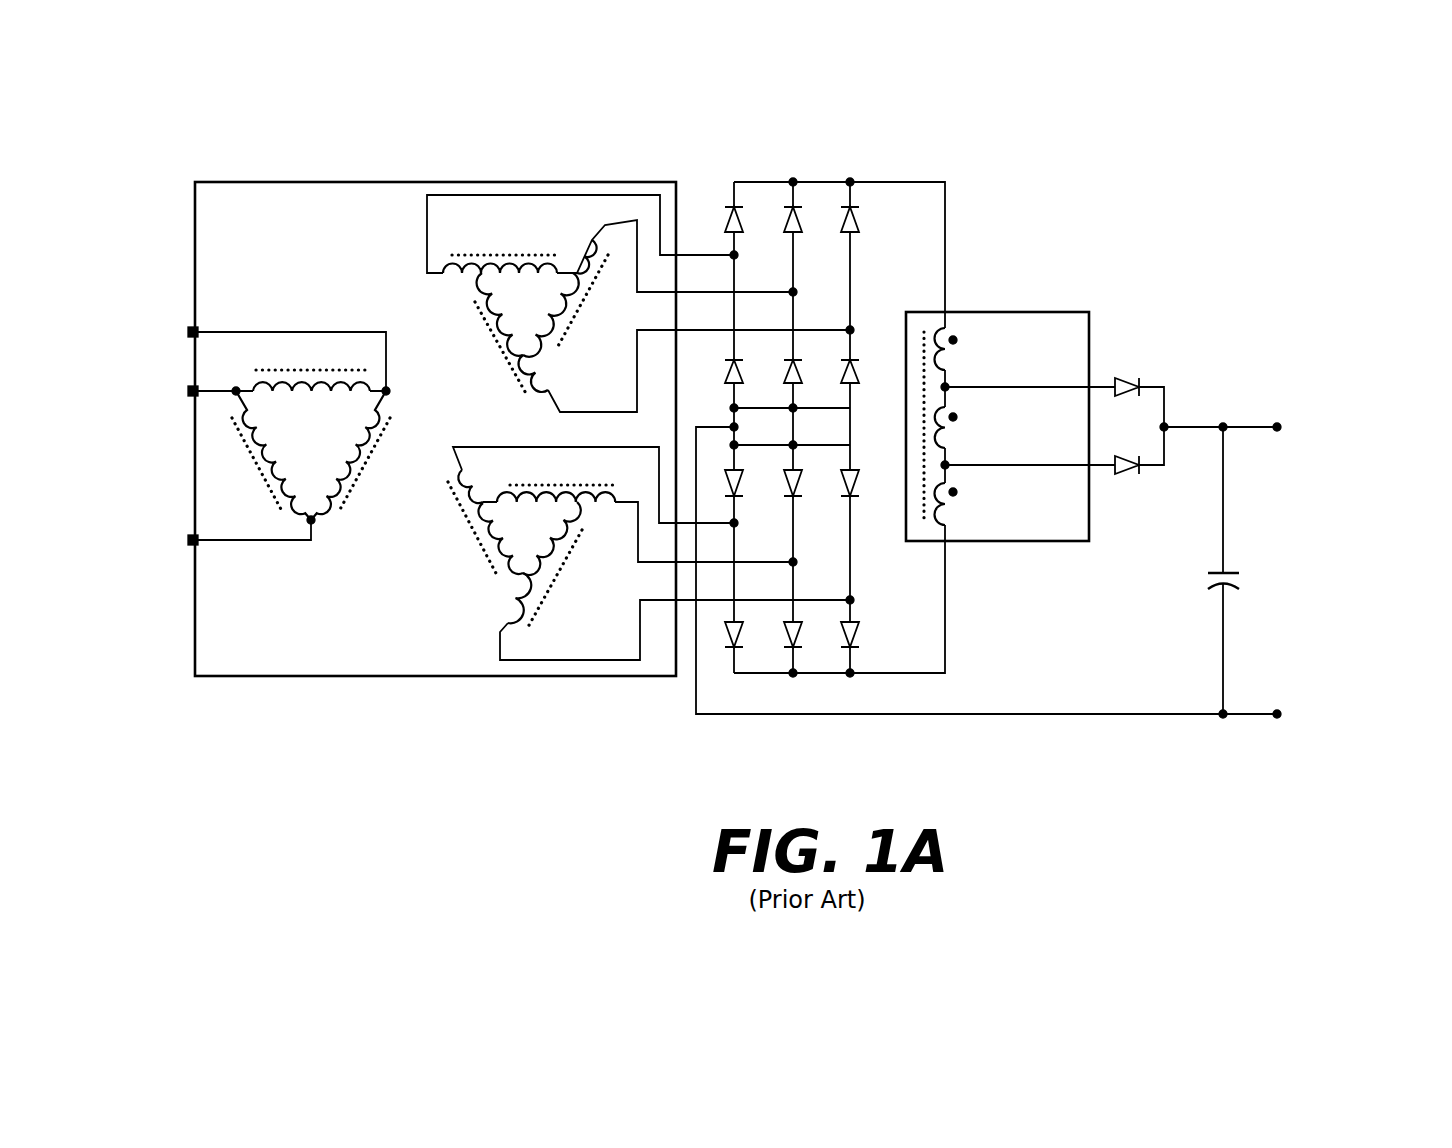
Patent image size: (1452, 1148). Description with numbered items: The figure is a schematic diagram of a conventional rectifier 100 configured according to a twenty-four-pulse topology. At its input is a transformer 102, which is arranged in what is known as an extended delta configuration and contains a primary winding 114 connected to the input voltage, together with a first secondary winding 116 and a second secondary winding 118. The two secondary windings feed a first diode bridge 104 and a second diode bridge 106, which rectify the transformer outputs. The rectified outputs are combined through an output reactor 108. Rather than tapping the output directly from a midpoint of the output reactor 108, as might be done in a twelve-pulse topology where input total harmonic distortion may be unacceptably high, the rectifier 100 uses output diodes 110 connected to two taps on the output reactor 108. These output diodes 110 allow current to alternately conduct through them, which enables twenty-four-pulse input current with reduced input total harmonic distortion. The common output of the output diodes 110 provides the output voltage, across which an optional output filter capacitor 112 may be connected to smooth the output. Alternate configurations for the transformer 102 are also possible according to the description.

The rectifier 100 is at (263, 145).
The transformer 102 is at (435, 180).
The first diode bridge 104 is at (766, 165).
The second diode bridge 106 is at (767, 723).
The output reactor 108 is at (1063, 310).
The output diodes 110 is at (1152, 367).
The output filter capacitor 112 is at (1233, 587).
The primary winding 114 is at (332, 533).
The first secondary winding 116 is at (502, 365).
The second secondary winding 118 is at (482, 582).